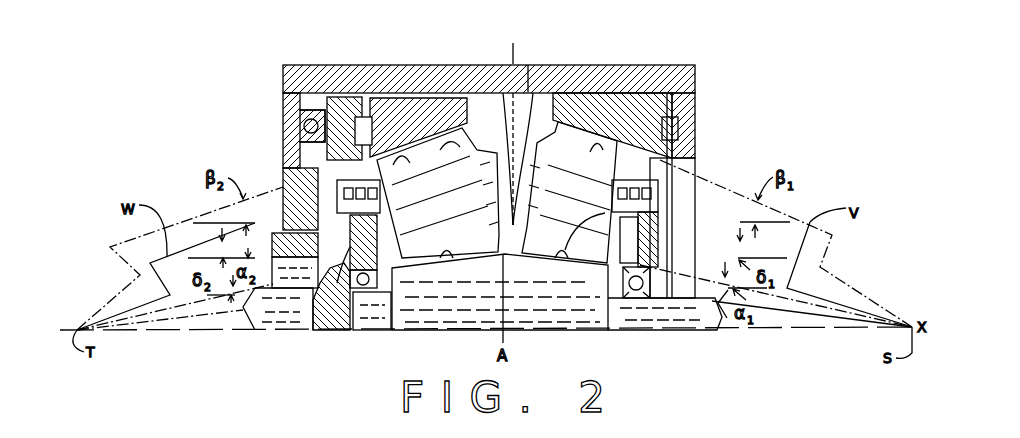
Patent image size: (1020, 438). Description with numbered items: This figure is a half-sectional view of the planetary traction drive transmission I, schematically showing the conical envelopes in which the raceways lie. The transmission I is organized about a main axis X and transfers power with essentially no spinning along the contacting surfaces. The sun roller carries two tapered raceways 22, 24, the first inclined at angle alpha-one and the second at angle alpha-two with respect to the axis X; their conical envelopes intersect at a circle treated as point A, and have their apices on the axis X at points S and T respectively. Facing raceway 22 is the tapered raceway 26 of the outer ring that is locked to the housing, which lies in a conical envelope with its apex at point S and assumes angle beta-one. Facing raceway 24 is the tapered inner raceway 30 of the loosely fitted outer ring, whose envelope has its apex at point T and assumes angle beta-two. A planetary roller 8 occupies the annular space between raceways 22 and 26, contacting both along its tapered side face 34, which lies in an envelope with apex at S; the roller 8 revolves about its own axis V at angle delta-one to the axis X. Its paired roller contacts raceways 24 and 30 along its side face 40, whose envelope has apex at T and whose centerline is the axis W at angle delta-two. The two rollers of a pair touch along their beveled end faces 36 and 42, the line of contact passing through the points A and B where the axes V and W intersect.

The planetary roller 8 is at (528, 65).
The tapered raceway 22 is at (565, 250).
The tapered raceway 24 is at (441, 258).
The tapered raceway 26 is at (595, 150).
The tapered inner raceway 30 is at (378, 157).
The tapered side face 34 is at (623, 298).
The beveled end face 36 is at (575, 64).
The side face 40 is at (455, 140).
The beveled end face 42 is at (503, 93).
The planetary traction drive transmission I is at (765, 90).